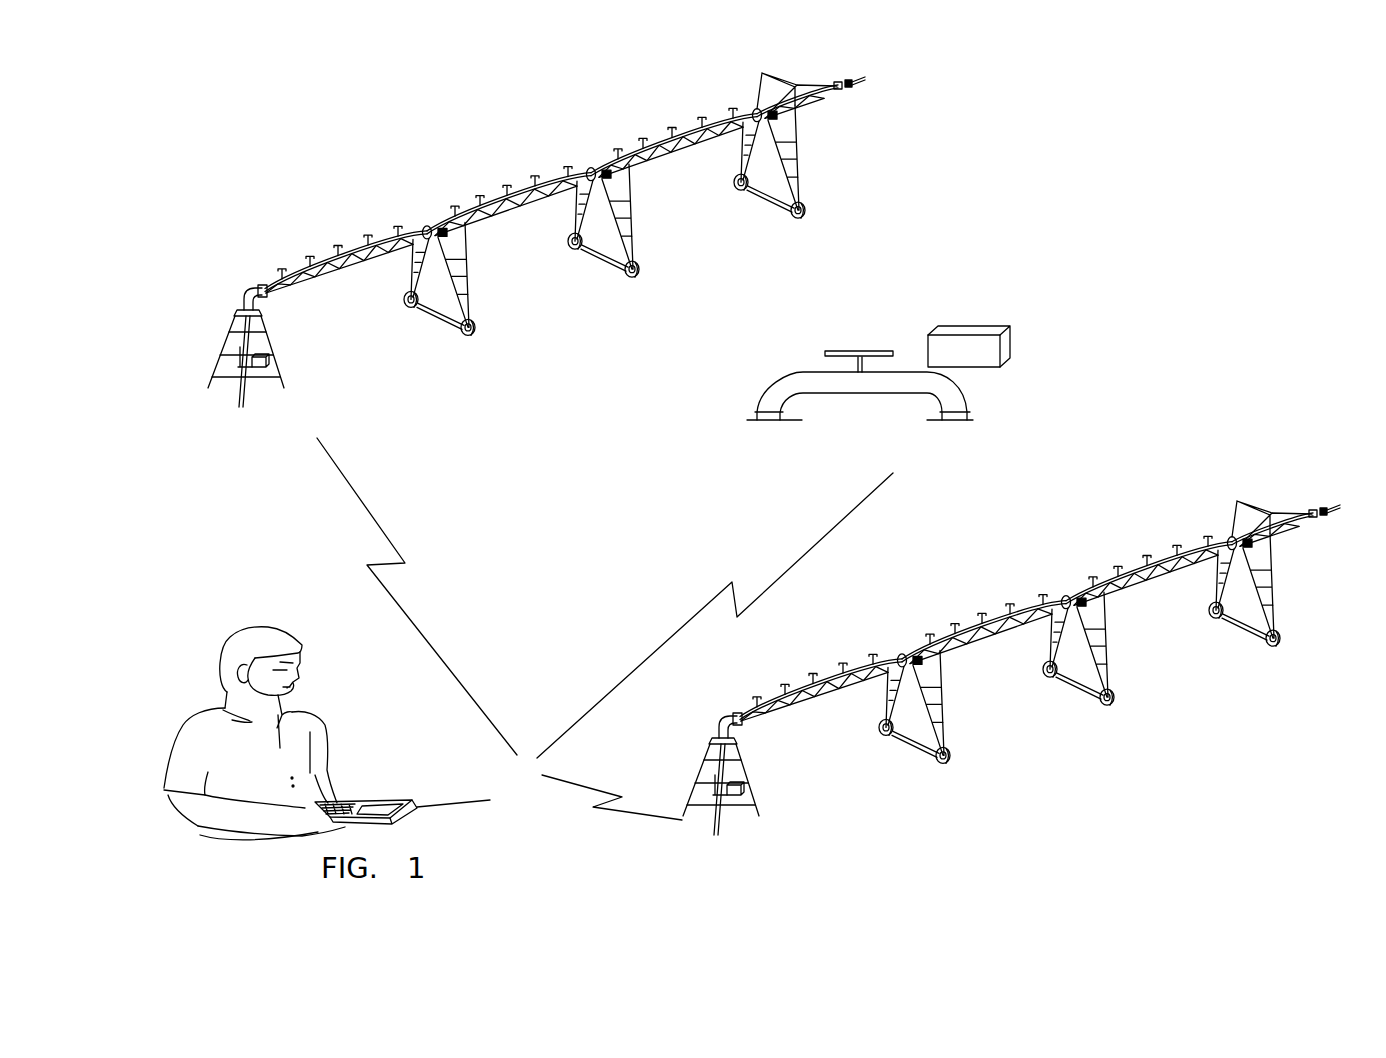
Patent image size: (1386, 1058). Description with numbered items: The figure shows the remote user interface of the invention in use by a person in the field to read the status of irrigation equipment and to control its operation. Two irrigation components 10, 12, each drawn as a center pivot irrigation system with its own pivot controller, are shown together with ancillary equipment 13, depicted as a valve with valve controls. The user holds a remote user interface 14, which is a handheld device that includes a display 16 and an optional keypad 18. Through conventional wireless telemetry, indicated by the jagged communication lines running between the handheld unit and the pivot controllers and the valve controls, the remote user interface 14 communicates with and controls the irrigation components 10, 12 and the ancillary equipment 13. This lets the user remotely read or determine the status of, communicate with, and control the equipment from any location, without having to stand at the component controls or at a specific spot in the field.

The irrigation component 10 is at (455, 155).
The irrigation component 12 is at (1068, 560).
The ancillary equipment 13 is at (905, 335).
The remote user interface 14 is at (402, 761).
The display 16 is at (387, 806).
The keypad 18 is at (337, 803).